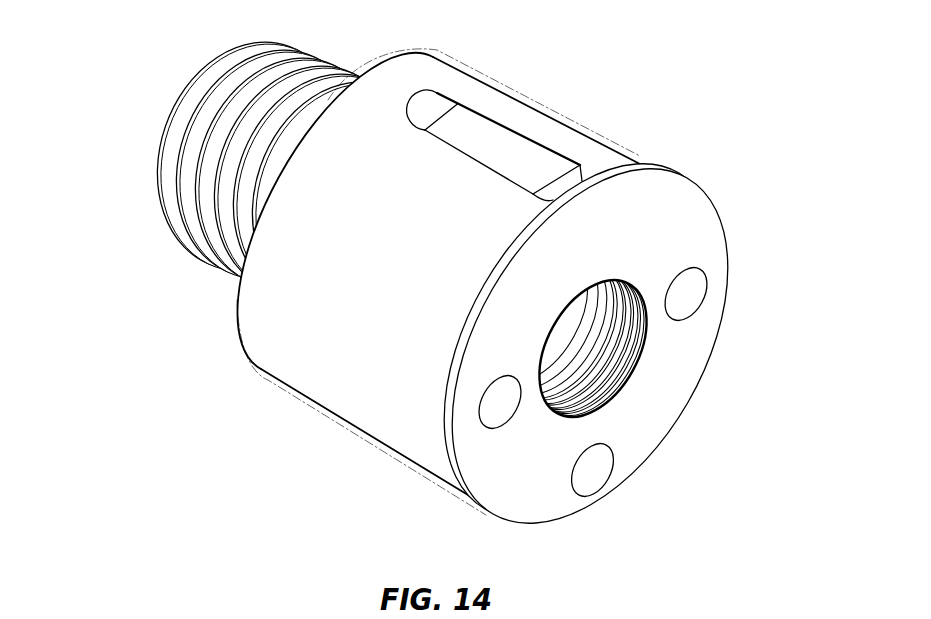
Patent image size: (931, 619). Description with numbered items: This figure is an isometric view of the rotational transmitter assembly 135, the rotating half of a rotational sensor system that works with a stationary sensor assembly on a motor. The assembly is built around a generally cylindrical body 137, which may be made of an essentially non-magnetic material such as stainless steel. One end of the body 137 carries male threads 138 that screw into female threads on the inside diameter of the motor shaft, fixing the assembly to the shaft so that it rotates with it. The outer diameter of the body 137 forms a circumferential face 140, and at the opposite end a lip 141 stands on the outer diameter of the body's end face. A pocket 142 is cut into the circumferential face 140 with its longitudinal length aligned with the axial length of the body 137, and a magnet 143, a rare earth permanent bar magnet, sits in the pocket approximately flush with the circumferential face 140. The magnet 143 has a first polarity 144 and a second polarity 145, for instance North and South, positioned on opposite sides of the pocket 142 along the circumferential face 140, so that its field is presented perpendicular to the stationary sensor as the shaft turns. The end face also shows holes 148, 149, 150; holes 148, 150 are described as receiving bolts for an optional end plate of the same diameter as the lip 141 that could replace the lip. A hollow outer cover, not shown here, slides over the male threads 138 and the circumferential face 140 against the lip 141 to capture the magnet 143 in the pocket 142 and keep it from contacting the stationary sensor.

The rotational transmitter assembly 135 is at (435, 287).
The cylindrical body 137 is at (275, 172).
The male threads 138 is at (193, 181).
The circumferential face 140 is at (278, 343).
The lip 141 is at (553, 503).
The pocket 142 is at (516, 119).
The magnet 143 is at (543, 163).
The first polarity 144 is at (524, 132).
The second polarity 145 is at (478, 166).
The hole 148 is at (690, 298).
The aperture 149 is at (597, 472).
The hole 150 is at (490, 405).